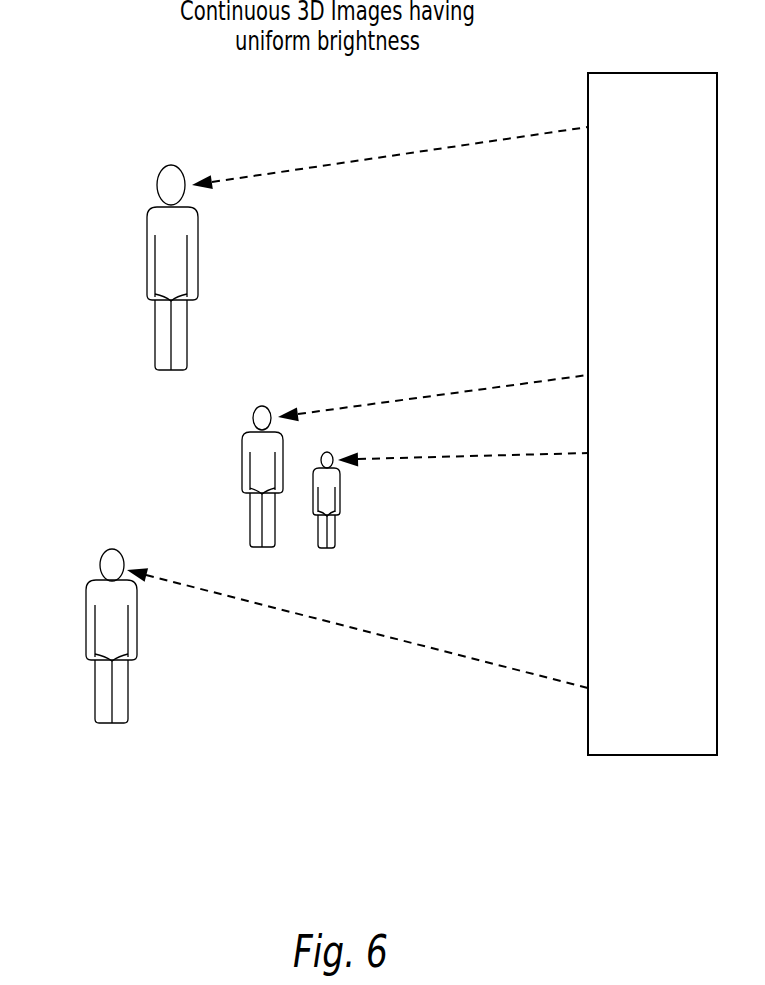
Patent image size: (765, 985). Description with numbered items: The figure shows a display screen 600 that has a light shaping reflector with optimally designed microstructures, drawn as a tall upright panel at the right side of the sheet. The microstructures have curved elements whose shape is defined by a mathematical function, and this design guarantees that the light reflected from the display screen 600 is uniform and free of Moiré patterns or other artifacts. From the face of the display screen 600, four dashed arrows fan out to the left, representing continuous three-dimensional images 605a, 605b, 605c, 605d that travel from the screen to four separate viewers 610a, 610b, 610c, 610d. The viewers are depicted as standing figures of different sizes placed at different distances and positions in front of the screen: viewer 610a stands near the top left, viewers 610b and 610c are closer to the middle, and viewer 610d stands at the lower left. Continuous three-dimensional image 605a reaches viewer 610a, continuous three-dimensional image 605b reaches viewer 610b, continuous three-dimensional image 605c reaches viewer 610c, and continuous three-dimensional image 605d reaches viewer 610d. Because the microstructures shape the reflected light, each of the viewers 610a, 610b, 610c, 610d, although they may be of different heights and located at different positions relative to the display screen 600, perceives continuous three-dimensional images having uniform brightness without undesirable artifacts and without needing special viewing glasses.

The display screen 600 is at (598, 73).
The continuous 3D image 605a is at (302, 168).
The continuous 3D image 605b is at (393, 400).
The continuous 3D image 605c is at (473, 458).
The continuous 3D image 605d is at (283, 610).
The viewer 610a is at (158, 178).
The viewer 610b is at (242, 460).
The viewer 610c is at (340, 488).
The viewer 610d is at (100, 563).